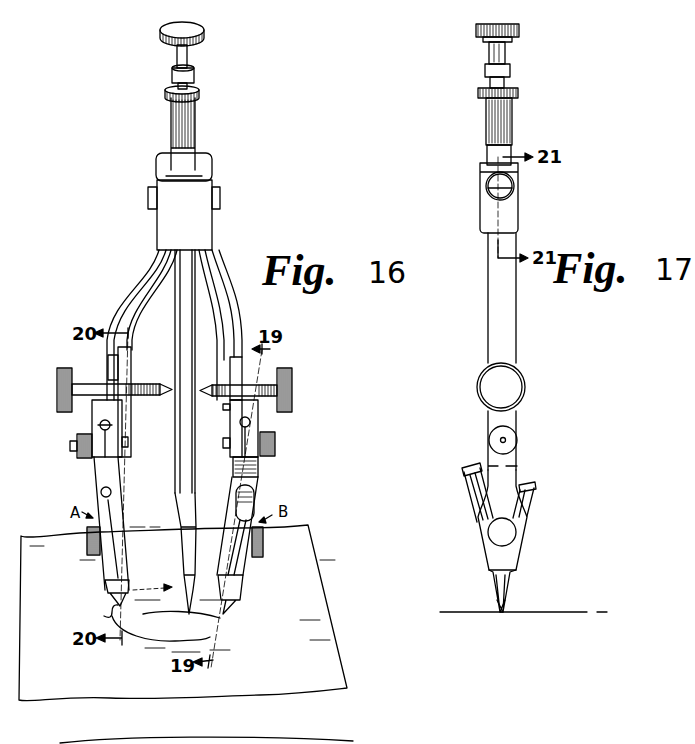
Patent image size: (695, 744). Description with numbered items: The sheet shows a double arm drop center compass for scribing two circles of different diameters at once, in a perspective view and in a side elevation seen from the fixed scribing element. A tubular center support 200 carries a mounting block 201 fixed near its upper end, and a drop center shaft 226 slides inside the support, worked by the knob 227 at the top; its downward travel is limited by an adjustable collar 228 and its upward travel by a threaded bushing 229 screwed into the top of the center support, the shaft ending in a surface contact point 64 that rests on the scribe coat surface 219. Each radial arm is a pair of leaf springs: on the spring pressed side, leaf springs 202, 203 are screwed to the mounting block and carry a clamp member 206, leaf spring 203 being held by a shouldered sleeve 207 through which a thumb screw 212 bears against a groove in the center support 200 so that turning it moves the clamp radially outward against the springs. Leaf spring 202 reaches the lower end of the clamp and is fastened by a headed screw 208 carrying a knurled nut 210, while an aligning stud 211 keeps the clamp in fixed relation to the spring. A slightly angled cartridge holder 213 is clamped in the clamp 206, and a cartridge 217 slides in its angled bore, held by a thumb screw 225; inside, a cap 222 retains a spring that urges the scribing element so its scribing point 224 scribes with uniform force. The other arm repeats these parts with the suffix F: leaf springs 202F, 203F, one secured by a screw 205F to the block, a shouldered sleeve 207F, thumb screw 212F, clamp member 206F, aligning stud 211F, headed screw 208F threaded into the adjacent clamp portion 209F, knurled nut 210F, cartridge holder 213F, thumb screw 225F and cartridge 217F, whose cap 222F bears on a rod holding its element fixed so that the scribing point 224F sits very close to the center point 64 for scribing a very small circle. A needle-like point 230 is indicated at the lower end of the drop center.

In FIG. 16, the knob 227 is at (202, 31).
In FIG. 17, the knob 227 is at (520, 30).
In FIG. 16, the drop center shaft 226 is at (178, 58).
In FIG. 16, the adjustable collar 228 is at (190, 73).
In FIG. 16, the threaded bushing 229 is at (198, 95).
In FIG. 17, the threaded bushing 229 is at (520, 93).
In FIG. 16, the mounting block 201 is at (202, 218).
In FIG. 16, the leaf spring 203 is at (118, 310).
In FIG. 16, the leaf spring 202 is at (128, 318).
In FIG. 16, the tubular center support 200 is at (176, 340).
In FIG. 17, the tubular center support 200 is at (490, 156).
In FIG. 16, the shouldered sleeve 207 is at (108, 370).
In FIG. 16, the thumb screw 212 is at (57, 387).
In FIG. 16, the clamp member 206 is at (98, 415).
In FIG. 16, the aligning stud 211 is at (120, 407).
In FIG. 16, the headed screw 208 is at (130, 441).
In FIG. 16, the knurled nut 210 is at (82, 449).
In FIG. 16, the cartridge holder 213 is at (100, 480).
In FIG. 16, the thumb screw 225 is at (87, 541).
In FIG. 16, the cartridge 217 is at (113, 585).
In FIG. 17, the cartridge 217 is at (531, 500).
In FIG. 16, the scribing point 224 is at (104, 616).
In FIG. 16, the needle point 230 is at (186, 588).
In FIG. 16, the surface contact point 64 is at (190, 621).
In FIG. 17, the surface contact point 64 is at (503, 613).
In FIG. 16, the scribe coat surface 219 is at (335, 670).
In FIG. 17, the scribe coat surface 219 is at (573, 616).
In FIG. 16, the scribing point 224F is at (222, 617).
In FIG. 16, the leaf spring 202F is at (215, 297).
In FIG. 16, the leaf spring 203F is at (238, 320).
In FIG. 17, the leaf spring 203F is at (505, 318).
In FIG. 16, the shouldered sleeve 207F is at (252, 380).
In FIG. 16, the thumb screw 212F is at (292, 388).
In FIG. 17, the thumb screw 212F is at (513, 387).
In FIG. 16, the clamp member 206F is at (228, 415).
In FIG. 16, the aligning stud 211F is at (238, 410).
In FIG. 16, the headed screw 208F is at (250, 421).
In FIG. 16, the knurled nut 210F is at (275, 455).
In FIG. 17, the knurled nut 210F is at (517, 440).
In FIG. 16, the adjacent portion of the clamp 209F is at (241, 463).
In FIG. 16, the cartridge holder 213F is at (237, 526).
In FIG. 17, the cartridge holder 213F is at (505, 477).
In FIG. 16, the thumb screw 225F is at (263, 540).
In FIG. 16, the cartridge 217F is at (233, 588).
In FIG. 17, the cartridge 217F is at (480, 500).
In FIG. 17, the screw 205F is at (503, 191).
In FIG. 17, the cap 222F is at (466, 471).
In FIG. 17, the cap 222 is at (536, 488).